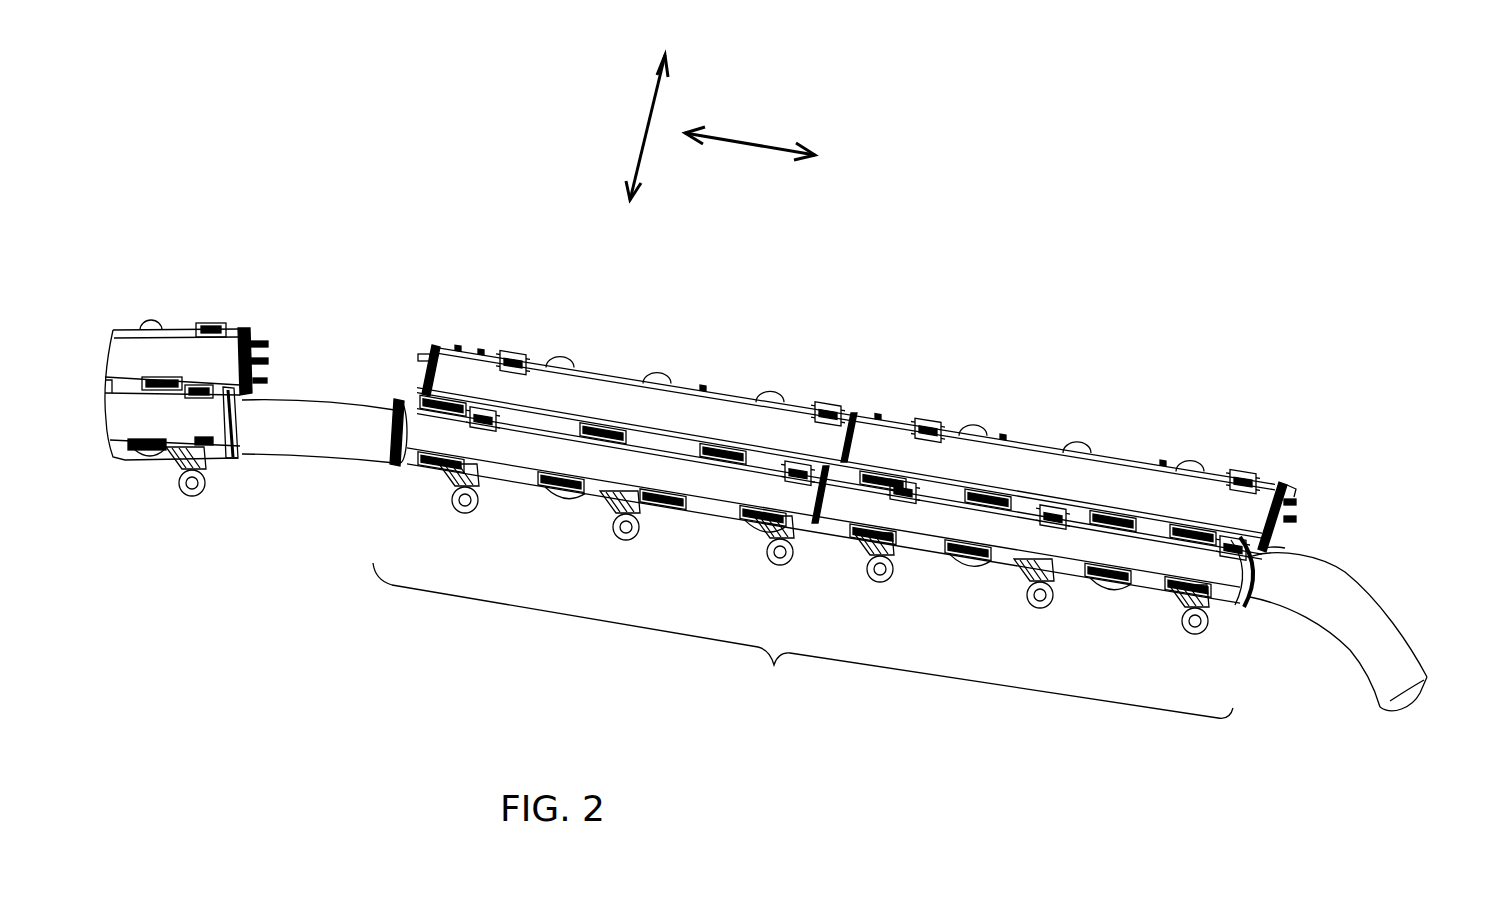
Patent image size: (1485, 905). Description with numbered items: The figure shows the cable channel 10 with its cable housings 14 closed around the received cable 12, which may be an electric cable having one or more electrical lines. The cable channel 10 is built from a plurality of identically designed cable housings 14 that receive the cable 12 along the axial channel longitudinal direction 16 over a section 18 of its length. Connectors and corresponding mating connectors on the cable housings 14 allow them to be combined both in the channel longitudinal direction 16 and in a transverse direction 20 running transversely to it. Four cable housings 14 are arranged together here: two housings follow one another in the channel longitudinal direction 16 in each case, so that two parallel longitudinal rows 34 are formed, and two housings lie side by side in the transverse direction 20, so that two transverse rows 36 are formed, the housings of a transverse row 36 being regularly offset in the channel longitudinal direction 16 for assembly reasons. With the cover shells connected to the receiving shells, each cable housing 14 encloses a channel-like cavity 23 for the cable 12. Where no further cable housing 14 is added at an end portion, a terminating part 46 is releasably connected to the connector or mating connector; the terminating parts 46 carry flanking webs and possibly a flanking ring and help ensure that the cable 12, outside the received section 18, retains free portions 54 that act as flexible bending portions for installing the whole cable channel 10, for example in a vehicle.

The cable channel 10 is at (1030, 157).
The cable 12 is at (308, 398).
The cable housing 14 is at (180, 300).
The channel longitudinal direction 16 is at (757, 140).
The section 18 is at (803, 640).
The transverse direction 20 is at (647, 142).
The channel-like cavity 23 is at (264, 372).
The longitudinal row 34 is at (1322, 515).
The transverse row 36 is at (728, 358).
The terminating part 46 is at (246, 462).
The free portion 54 is at (304, 458).